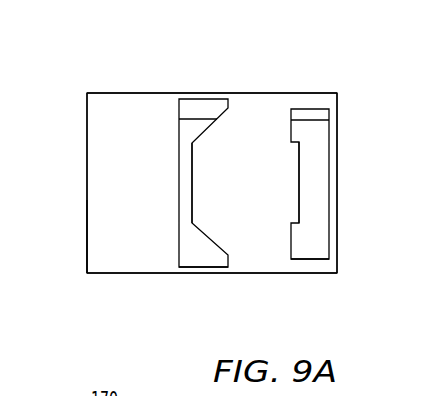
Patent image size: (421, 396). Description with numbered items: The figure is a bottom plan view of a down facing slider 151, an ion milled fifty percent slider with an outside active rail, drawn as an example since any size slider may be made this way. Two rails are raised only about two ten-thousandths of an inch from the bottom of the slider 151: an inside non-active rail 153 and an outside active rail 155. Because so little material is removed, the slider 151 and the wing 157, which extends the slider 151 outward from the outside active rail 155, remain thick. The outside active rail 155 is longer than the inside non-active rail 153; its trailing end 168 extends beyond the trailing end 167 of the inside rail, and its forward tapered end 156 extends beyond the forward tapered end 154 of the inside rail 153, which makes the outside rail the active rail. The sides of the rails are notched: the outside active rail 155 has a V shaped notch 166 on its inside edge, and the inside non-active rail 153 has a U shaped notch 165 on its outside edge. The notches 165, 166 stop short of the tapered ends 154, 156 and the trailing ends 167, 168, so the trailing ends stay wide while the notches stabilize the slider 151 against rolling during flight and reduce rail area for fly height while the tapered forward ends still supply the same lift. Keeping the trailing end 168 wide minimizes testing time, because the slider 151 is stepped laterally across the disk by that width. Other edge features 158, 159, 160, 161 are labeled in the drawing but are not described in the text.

The down facing slider 151 is at (69, 65).
The inside non-active rail 153 is at (329, 145).
The forward tapered end of inside rail 154 is at (309, 115).
The outside active rail 155 is at (178, 135).
The forward tapered end of outside rail 156 is at (200, 108).
The wing 157 is at (92, 229).
The top surface of encapsulant 158 is at (111, 92).
The bottom surface of encapsulant 159 is at (115, 275).
The encapsulant body 160 is at (87, 163).
The side surface 161 is at (337, 183).
The U shaped notch 165 is at (299, 203).
The V shaped notch 166 is at (192, 155).
The trailing end of inside rail 167 is at (307, 259).
The trailing end of outside rail 168 is at (202, 268).